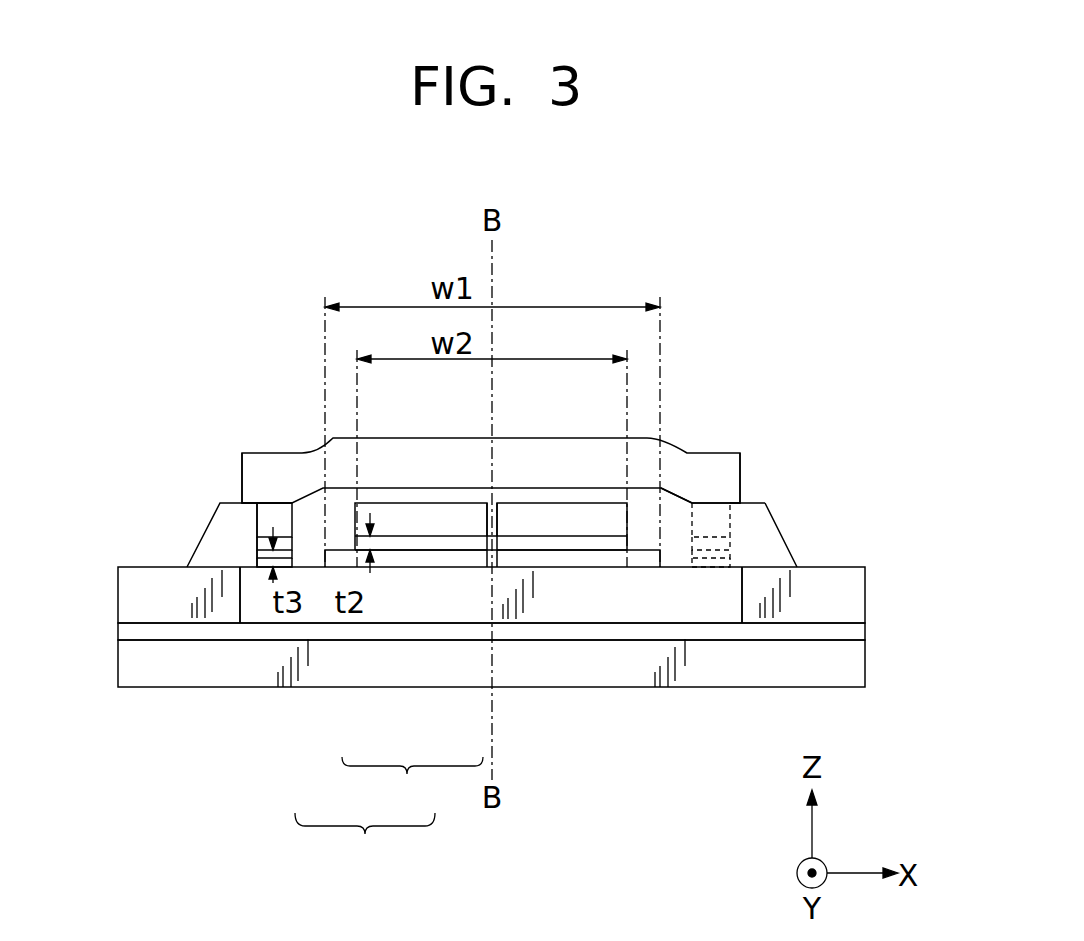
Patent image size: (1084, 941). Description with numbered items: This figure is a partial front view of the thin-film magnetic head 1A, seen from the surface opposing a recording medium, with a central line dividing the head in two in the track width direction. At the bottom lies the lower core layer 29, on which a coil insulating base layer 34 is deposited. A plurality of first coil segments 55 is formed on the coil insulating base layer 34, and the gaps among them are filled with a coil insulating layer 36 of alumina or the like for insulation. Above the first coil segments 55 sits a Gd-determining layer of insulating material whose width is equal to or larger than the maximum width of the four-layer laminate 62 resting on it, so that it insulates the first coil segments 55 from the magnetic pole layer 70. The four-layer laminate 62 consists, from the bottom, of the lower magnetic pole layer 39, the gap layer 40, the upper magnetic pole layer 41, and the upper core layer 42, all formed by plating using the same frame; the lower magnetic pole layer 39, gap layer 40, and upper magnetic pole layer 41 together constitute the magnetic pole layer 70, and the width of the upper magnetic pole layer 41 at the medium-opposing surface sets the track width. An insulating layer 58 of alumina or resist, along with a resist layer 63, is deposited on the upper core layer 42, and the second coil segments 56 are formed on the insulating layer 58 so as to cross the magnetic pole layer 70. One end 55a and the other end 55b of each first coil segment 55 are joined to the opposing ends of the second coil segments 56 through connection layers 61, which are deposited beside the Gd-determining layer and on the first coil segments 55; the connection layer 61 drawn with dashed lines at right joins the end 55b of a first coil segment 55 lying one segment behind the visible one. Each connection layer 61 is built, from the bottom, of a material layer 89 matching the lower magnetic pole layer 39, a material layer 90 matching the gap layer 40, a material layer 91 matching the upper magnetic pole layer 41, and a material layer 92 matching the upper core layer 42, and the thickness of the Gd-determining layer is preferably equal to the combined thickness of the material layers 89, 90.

The thin-film magnetic head 1A is at (760, 403).
The lower core layer 29 is at (850, 672).
The coil insulating base layer 34 is at (850, 633).
The coil insulating layer 36 is at (140, 598).
The lower magnetic pole layer 39 is at (487, 563).
The gap layer 40 is at (487, 555).
The upper magnetic pole layer 41 is at (487, 545).
The upper core layer 42 is at (487, 518).
The first coil segments 55 is at (590, 605).
The one end of first coil segment 55a is at (252, 578).
The other end of first coil segment 55b is at (731, 575).
The second coil segments 56 is at (418, 464).
The insulating layer 58 is at (561, 493).
The connection layers 61 is at (300, 523).
The four-layer laminate 62 is at (365, 844).
The resist layer 63 is at (641, 512).
The magnetic pole layer 70 is at (412, 788).
The material layer 89 is at (257, 564).
The material layer 90 is at (257, 556).
The material layer 91 is at (257, 546).
The material layer 92 is at (257, 519).